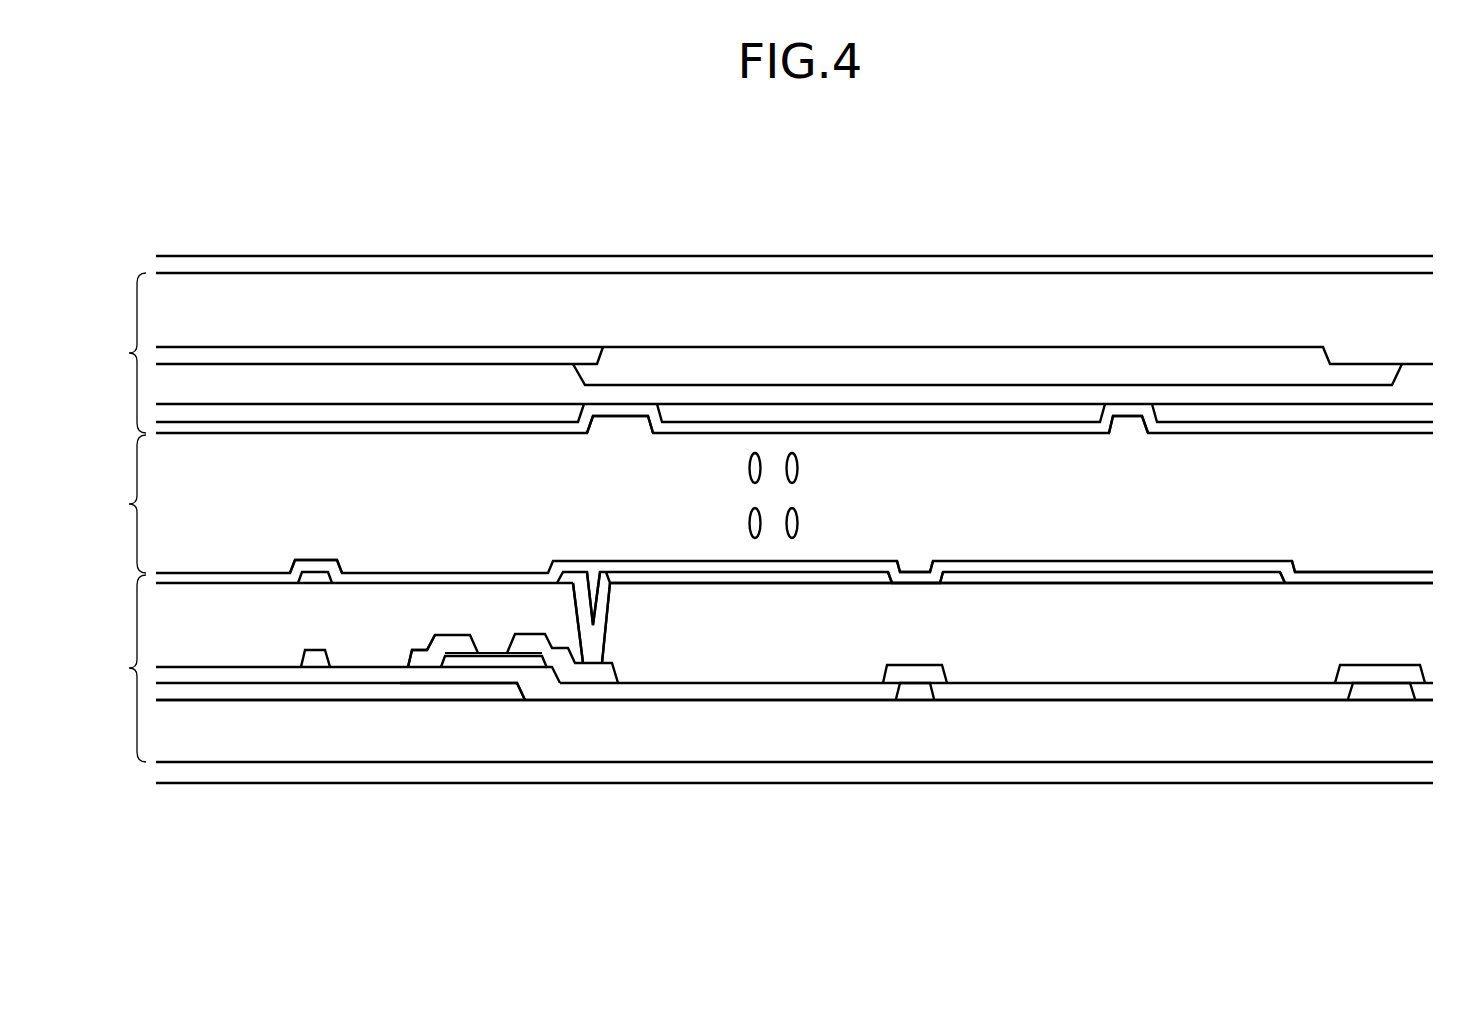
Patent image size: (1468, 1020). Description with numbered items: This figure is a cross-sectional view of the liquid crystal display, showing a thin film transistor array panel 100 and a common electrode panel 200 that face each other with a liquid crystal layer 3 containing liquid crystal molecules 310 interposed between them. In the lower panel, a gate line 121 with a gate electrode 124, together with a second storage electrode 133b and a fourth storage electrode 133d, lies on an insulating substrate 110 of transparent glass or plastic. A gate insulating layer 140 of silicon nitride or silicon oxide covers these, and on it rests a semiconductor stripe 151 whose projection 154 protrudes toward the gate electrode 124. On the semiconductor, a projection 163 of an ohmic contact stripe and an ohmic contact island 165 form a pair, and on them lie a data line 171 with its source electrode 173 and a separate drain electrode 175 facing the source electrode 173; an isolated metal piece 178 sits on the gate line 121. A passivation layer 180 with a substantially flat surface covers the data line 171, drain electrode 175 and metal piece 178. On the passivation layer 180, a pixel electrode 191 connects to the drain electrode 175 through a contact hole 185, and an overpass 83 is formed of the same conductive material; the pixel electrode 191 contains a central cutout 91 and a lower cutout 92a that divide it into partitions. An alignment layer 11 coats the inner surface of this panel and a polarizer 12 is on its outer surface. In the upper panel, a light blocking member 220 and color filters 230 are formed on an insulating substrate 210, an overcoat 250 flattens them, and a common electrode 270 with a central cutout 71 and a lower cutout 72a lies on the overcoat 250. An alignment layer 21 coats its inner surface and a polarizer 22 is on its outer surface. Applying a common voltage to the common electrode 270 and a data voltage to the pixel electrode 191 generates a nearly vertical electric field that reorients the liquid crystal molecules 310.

The polarizer 22 is at (172, 264).
The common electrode panel 200 is at (114, 353).
The liquid crystal layer 3 is at (126, 504).
The thin film transistor array panel 100 is at (114, 668).
The polarizer 12 is at (172, 772).
The insulating substrate 210 is at (726, 292).
The light blocking member 220 is at (465, 358).
The color filter 230 is at (953, 360).
The overcoat 250 is at (838, 390).
The common electrode 270 is at (1048, 412).
The alignment layer 21 is at (202, 426).
The lower cutout 72a is at (594, 426).
The central cutout 71 is at (1112, 426).
The liquid crystal molecules 310 is at (797, 470).
The alignment layer 11 is at (203, 580).
The overpass 83 is at (313, 577).
The pixel electrode 191 is at (670, 581).
The contact hole 185 is at (579, 606).
The lower cutout 92a is at (893, 578).
The central cutout 91 is at (1293, 574).
The gate insulating layer 140 is at (983, 692).
The gate line 121 is at (223, 693).
The gate electrode 124 is at (509, 693).
The insulating substrate 110 is at (1068, 735).
The isolated metal piece 178 is at (320, 660).
The semiconductor stripe 151 is at (449, 655).
The projection 154 is at (497, 653).
The projection 163 is at (462, 657).
The ohmic contact island 165 is at (527, 655).
The source electrode 173 is at (457, 641).
The data line 171 is at (418, 650).
The drain electrode 175 is at (597, 672).
The passivation layer 180 is at (810, 648).
The fourth storage electrode 133d is at (913, 690).
The second storage electrode 133b is at (1378, 690).